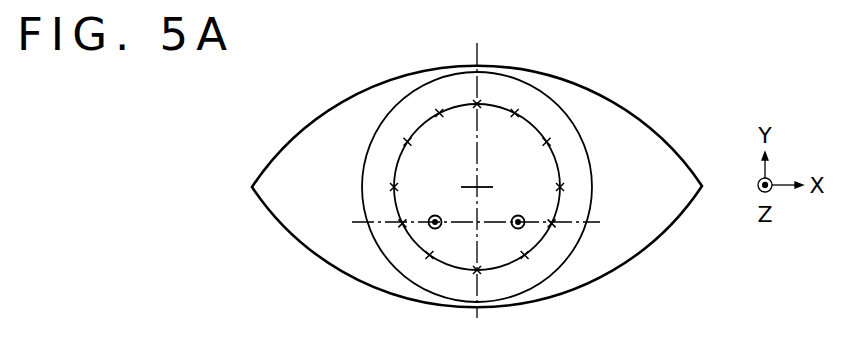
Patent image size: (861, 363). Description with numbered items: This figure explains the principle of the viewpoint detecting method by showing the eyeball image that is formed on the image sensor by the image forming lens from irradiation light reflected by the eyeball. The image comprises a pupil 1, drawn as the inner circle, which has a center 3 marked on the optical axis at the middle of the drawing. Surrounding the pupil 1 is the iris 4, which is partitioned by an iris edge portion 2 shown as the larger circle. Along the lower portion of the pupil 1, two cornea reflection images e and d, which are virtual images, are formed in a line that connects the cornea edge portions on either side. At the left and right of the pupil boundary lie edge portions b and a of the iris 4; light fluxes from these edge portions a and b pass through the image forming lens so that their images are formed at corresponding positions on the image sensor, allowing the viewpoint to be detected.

The pupil 1 is at (432, 140).
The iris edge portion 2 is at (384, 154).
The center of the pupil 3 is at (477, 186).
The iris 4 is at (527, 102).
The edge portion of the iris a is at (553, 233).
The edge portion of the iris b is at (400, 230).
The cornea reflection image d is at (524, 227).
The cornea reflection image e is at (438, 231).